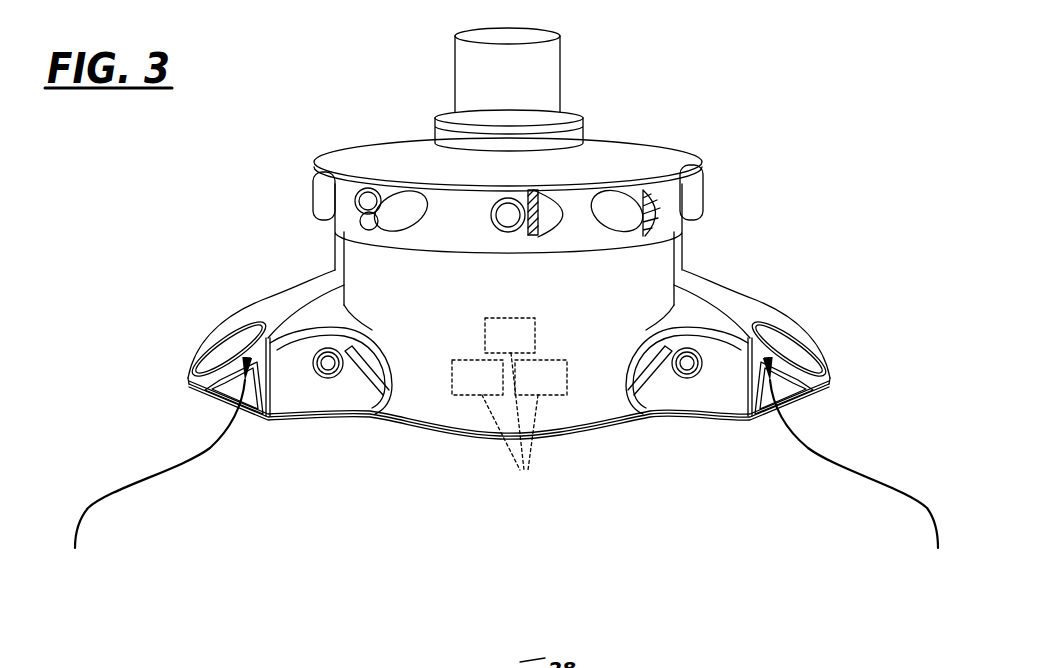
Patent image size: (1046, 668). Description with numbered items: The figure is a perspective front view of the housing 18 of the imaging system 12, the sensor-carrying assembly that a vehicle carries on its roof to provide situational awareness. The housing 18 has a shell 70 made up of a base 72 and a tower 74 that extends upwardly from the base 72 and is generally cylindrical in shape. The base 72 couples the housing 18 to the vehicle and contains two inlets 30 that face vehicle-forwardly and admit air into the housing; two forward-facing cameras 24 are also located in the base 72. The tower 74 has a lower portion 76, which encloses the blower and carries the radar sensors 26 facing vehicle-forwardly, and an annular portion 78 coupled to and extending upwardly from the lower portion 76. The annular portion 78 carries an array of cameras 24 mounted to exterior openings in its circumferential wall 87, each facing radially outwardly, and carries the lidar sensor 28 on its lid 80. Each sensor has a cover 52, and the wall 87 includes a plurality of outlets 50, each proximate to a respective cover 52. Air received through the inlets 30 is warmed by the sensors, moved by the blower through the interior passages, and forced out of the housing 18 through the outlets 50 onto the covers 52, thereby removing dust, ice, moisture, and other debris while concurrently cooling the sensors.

The imaging system 12 is at (733, 72).
The housing 18 is at (327, 152).
The camera sensors 24 is at (637, 191).
The radar sensors 26 is at (509, 408).
The lidar sensor 28 is at (562, 82).
The inlet 30 is at (222, 385).
The outlet 50 is at (366, 226).
The cover 52 is at (358, 204).
The shell 70 is at (787, 313).
The base 72 is at (748, 310).
The tower 74 is at (348, 270).
The lower portion 76 is at (650, 280).
The annular portion 78 is at (673, 215).
The lid 80 is at (667, 160).
The circumferential wall 87 is at (673, 188).